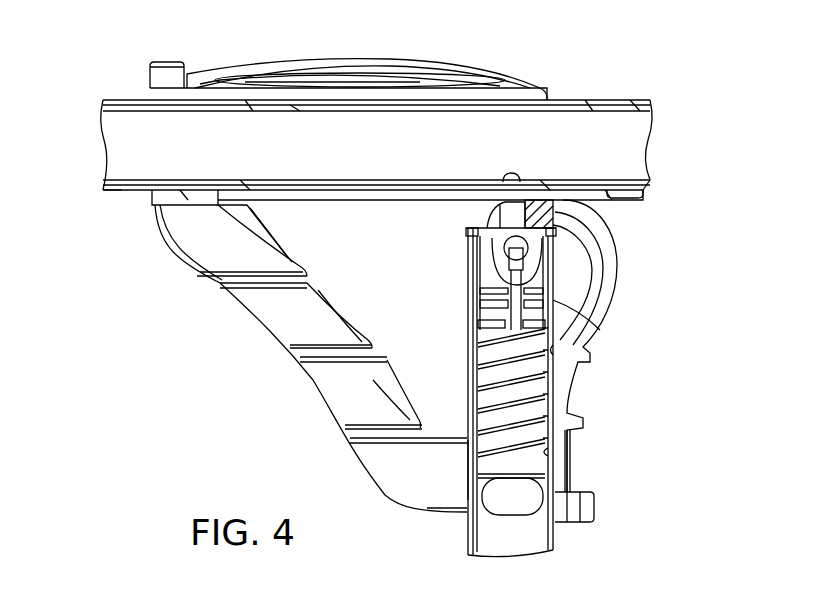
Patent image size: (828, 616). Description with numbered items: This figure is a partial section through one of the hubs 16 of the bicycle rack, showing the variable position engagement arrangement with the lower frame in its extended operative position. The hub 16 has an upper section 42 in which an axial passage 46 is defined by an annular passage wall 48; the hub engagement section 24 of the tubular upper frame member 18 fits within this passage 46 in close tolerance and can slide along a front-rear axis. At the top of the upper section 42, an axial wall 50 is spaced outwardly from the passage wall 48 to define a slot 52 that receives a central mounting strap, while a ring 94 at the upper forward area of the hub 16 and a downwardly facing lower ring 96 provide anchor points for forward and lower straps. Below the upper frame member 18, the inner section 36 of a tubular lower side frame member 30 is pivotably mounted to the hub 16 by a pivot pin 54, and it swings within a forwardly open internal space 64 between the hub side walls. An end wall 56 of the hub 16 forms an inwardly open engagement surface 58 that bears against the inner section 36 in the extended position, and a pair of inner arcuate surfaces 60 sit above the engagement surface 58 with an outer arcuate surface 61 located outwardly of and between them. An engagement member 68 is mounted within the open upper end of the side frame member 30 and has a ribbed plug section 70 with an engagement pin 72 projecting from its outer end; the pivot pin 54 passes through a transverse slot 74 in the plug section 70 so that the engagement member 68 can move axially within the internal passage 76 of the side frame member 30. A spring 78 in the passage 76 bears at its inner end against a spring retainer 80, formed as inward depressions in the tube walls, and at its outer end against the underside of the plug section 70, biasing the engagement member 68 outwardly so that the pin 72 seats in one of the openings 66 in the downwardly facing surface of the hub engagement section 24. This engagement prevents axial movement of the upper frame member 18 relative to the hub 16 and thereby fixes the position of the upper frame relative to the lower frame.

The hub 16 is at (310, 358).
The upper frame member 18 is at (622, 90).
The hub engagement section 24 is at (121, 192).
The side frame member 30 is at (532, 398).
The inner section 36 is at (468, 470).
The upper section 42 is at (503, 72).
The axial passage 46 is at (172, 106).
The annular passage wall 48 is at (487, 261).
The axial wall 50 is at (358, 60).
The slot 52 is at (415, 82).
The pivot pin 54 is at (510, 252).
The end wall 56 is at (576, 378).
The engagement surface 58 is at (548, 453).
The inner arcuate surface 60 is at (562, 272).
The outer arcuate surface 61 is at (590, 236).
The internal space 64 is at (363, 300).
The openings 66 is at (640, 196).
The engagement member 68 is at (540, 205).
The plug section 70 is at (540, 300).
The engagement pin 72 is at (510, 174).
The transverse slot 74 is at (520, 250).
The internal passage 76 is at (553, 345).
The spring 78 is at (545, 430).
The spring retainer 80 is at (505, 518).
The ring 94 is at (170, 60).
The lower ring 96 is at (593, 506).